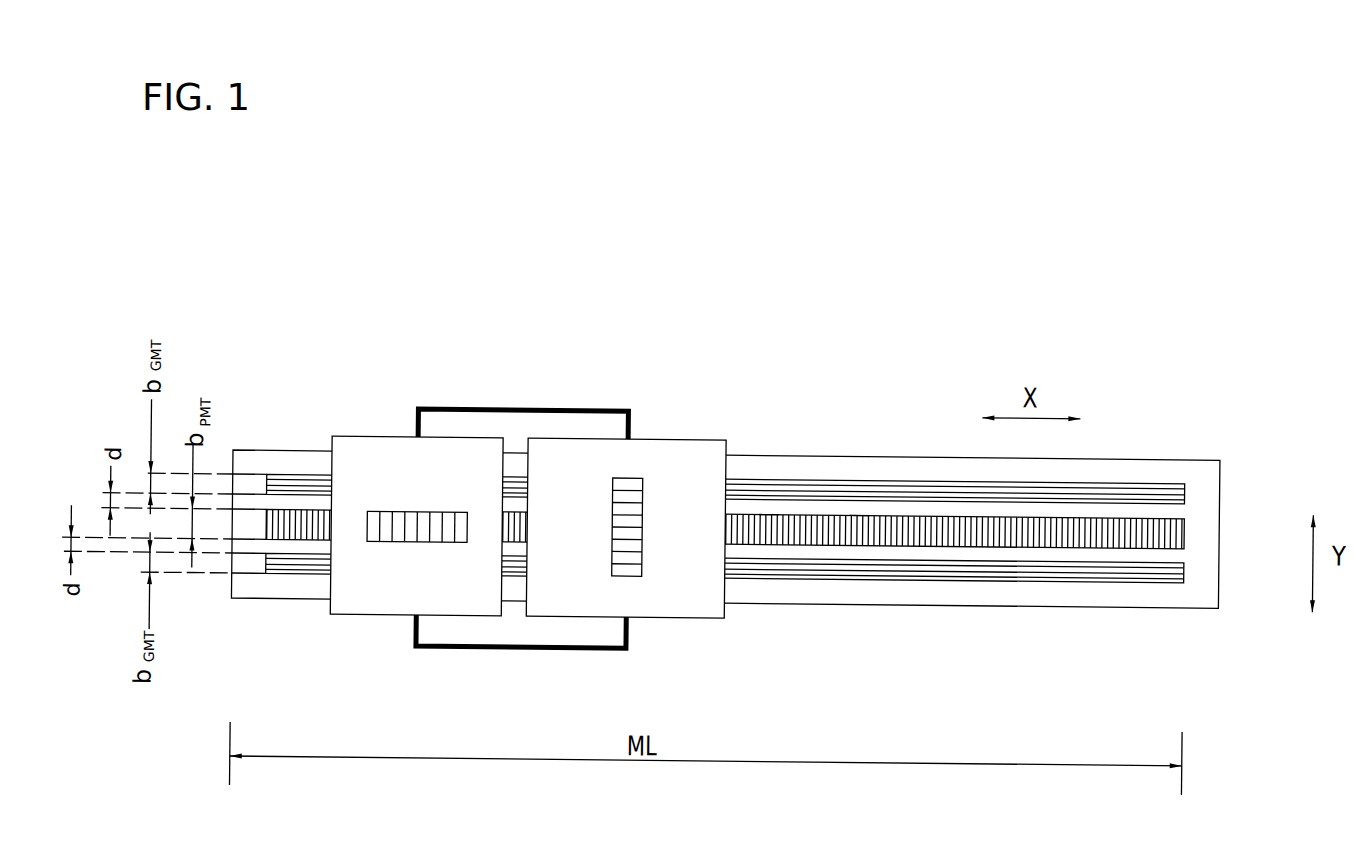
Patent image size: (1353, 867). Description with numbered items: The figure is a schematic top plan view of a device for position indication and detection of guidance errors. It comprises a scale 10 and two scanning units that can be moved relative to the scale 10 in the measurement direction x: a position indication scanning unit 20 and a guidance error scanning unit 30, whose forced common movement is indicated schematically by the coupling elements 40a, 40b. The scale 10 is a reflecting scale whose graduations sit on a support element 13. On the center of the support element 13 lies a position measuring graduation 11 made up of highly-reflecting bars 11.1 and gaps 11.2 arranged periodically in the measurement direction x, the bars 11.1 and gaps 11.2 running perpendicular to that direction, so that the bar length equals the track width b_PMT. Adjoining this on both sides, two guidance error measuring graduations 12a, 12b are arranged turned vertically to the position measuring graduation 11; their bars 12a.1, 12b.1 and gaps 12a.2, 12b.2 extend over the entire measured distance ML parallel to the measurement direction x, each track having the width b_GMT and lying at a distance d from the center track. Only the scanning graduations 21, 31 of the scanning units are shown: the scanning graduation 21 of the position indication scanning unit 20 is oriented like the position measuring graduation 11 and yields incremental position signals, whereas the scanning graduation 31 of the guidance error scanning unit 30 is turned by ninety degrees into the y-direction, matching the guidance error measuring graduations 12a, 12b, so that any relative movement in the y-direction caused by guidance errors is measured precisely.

The scale 10 is at (1047, 604).
The position measuring graduation 11 is at (1177, 522).
The bars of the position measuring graduation 11.1 is at (860, 514).
The gaps of the position measuring graduation 11.2 is at (771, 521).
The guidance error measuring graduation 12a is at (1187, 487).
The bars of the first guidance error measuring graduation 12a.1 is at (1097, 477).
The gaps of the first guidance error measuring graduation 12a.2 is at (1125, 482).
The guidance error measuring graduation 12b is at (1157, 563).
The bars of the second guidance error measuring graduation 12b.1 is at (1097, 572).
The gaps of the second guidance error measuring graduation 12b.2 is at (947, 562).
The support element 13 is at (842, 586).
The position indication scanning unit 20 is at (363, 613).
The scanning graduation 21 is at (395, 520).
The guidance error scanning unit 30 is at (702, 613).
The scanning graduation 31 is at (640, 529).
The coupling element 40a is at (563, 405).
The coupling element 40b is at (463, 646).